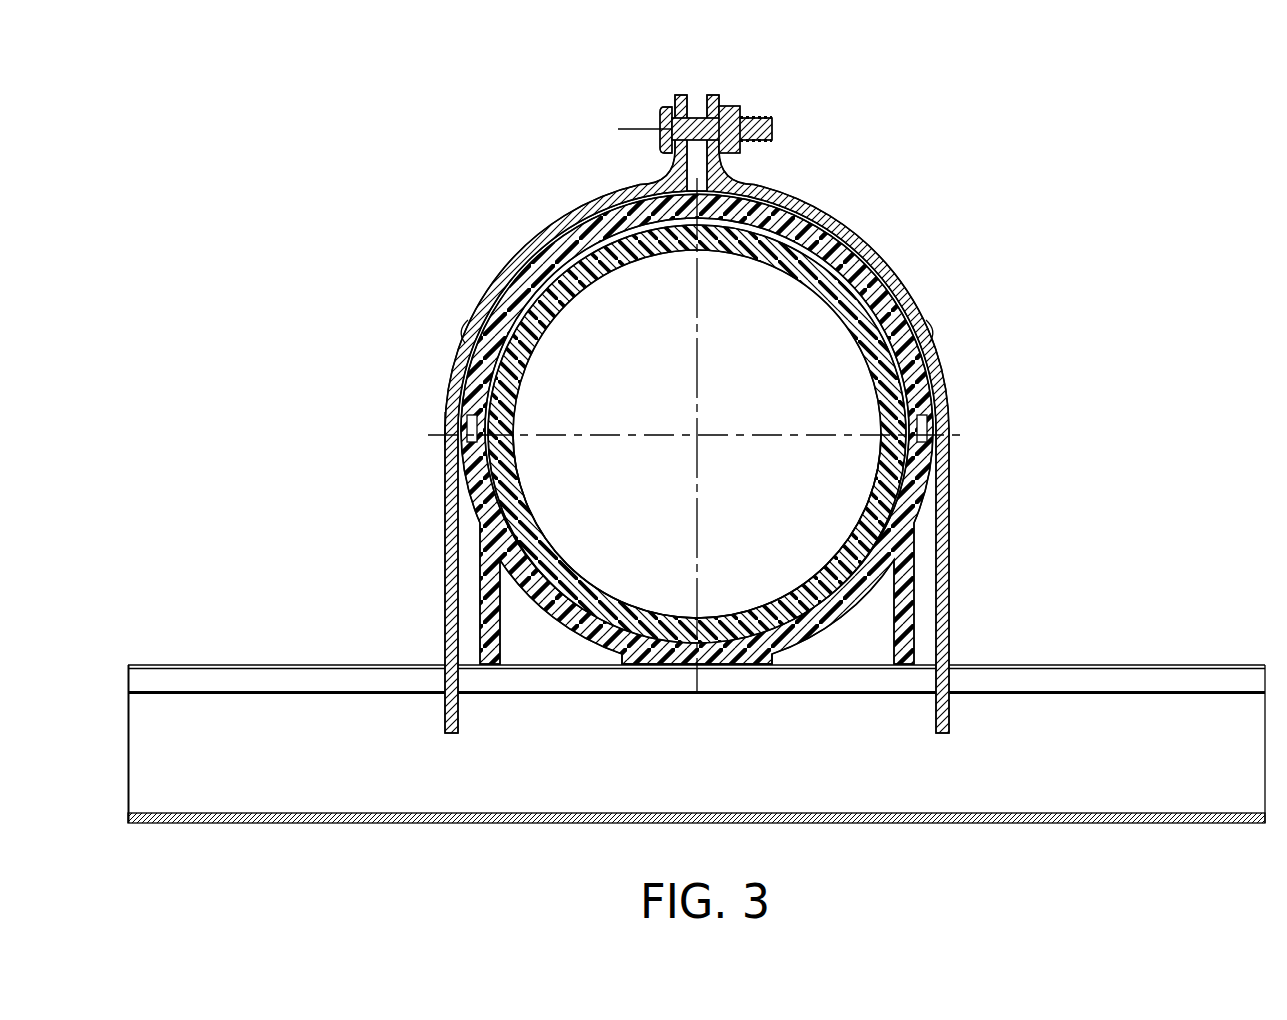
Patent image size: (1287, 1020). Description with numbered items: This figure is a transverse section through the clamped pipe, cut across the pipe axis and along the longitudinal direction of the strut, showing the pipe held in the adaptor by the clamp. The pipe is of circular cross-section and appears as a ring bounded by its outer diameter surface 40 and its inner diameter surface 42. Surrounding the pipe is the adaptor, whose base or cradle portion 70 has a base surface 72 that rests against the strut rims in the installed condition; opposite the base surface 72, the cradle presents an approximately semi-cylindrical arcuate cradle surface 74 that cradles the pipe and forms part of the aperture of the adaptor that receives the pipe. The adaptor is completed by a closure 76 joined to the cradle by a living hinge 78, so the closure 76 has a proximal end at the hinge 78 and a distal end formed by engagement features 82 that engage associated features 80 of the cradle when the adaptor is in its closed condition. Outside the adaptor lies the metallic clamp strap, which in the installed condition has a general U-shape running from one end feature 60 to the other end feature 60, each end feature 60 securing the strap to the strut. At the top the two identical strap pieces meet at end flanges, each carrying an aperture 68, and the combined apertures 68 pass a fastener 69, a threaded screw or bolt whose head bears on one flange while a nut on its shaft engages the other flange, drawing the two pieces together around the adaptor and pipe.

The outer diameter surface 40 is at (823, 228).
The inner diameter surface 42 is at (745, 252).
The end feature 60 is at (448, 712).
The aperture 68 is at (700, 118).
The fastener 69 is at (772, 127).
The cradle portion 70 is at (634, 674).
The base surface 72 is at (746, 668).
The arcuate cradle surface 74 is at (578, 578).
The closure 76 is at (853, 265).
The living hinge 78 is at (895, 423).
The features of the cradle 80 is at (500, 423).
The engagement features 82 is at (440, 422).